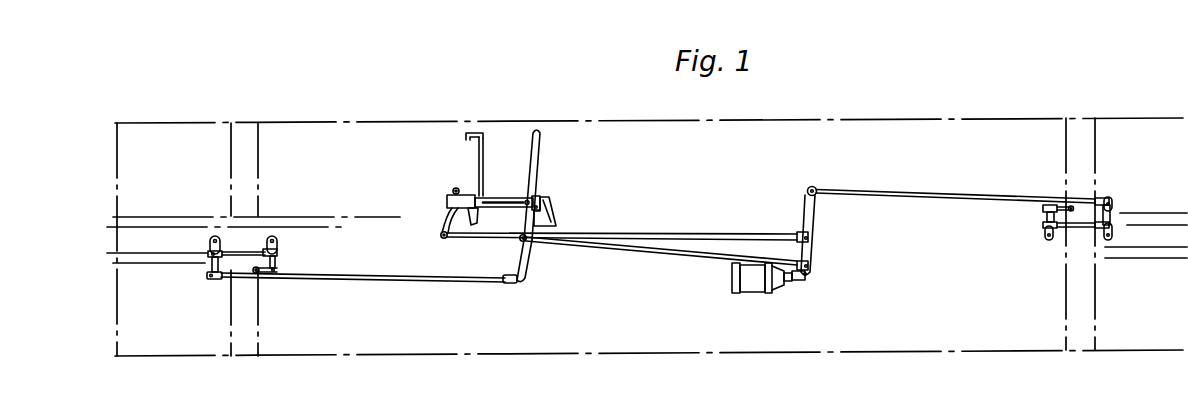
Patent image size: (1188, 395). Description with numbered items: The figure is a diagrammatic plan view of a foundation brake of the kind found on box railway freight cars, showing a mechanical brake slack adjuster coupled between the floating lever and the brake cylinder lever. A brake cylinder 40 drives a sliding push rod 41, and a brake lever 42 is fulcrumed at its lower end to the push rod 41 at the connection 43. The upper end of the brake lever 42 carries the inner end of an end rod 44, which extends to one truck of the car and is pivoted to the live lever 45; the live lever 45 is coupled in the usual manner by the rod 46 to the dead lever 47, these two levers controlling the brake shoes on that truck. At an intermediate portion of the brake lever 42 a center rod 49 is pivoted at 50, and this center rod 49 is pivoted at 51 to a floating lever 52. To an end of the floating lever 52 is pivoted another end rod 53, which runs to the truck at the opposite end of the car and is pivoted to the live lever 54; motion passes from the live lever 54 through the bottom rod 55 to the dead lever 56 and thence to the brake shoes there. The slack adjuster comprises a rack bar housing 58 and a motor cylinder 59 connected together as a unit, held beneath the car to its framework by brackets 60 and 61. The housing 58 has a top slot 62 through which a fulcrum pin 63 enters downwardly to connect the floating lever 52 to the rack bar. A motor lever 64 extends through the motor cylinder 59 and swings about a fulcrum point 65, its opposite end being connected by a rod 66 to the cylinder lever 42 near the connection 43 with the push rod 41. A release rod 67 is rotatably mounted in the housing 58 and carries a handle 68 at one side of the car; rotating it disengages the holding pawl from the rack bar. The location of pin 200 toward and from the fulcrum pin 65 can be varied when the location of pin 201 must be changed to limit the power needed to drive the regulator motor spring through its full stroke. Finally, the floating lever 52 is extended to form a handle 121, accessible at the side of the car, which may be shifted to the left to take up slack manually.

The brake cylinder 40 is at (756, 283).
The sliding push rod 41 is at (795, 282).
The brake lever 42 is at (808, 218).
The fulcrum connection 43 is at (806, 279).
The end rod 44 is at (913, 191).
The live lever 45 is at (1113, 208).
The rod 46 is at (1078, 229).
The dead lever 47 is at (1043, 216).
The center rod 49 is at (668, 234).
The pivot 50 is at (813, 238).
The pivot 51 is at (527, 236).
The floating lever 52 is at (519, 258).
The end rod 53 is at (406, 284).
The live lever 54 is at (209, 267).
The bottom rod 55 is at (246, 251).
The dead lever 56 is at (276, 258).
The rack bar housing 58 is at (501, 197).
The motor cylinder 59 is at (467, 195).
The bracket 60 is at (553, 208).
The bracket 61 is at (472, 226).
The top slot 62 is at (486, 207).
The fulcrum pin 63 is at (535, 195).
The motor lever 64 is at (444, 224).
The fulcrum point 65 is at (454, 189).
The rod 66 is at (665, 257).
The release rod 67 is at (483, 150).
The handle 68 is at (469, 133).
The handle 121 is at (537, 150).
The pin 200 is at (441, 237).
The pin 201 is at (812, 265).